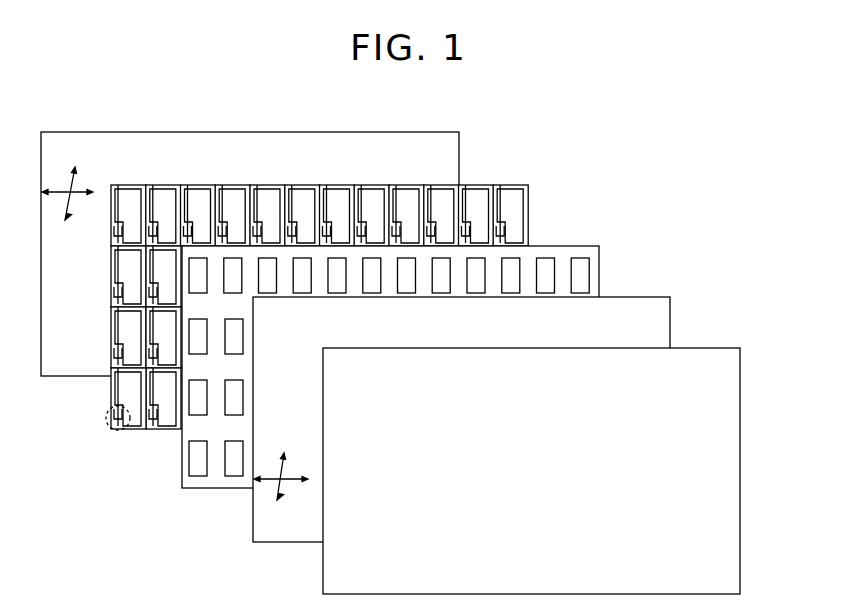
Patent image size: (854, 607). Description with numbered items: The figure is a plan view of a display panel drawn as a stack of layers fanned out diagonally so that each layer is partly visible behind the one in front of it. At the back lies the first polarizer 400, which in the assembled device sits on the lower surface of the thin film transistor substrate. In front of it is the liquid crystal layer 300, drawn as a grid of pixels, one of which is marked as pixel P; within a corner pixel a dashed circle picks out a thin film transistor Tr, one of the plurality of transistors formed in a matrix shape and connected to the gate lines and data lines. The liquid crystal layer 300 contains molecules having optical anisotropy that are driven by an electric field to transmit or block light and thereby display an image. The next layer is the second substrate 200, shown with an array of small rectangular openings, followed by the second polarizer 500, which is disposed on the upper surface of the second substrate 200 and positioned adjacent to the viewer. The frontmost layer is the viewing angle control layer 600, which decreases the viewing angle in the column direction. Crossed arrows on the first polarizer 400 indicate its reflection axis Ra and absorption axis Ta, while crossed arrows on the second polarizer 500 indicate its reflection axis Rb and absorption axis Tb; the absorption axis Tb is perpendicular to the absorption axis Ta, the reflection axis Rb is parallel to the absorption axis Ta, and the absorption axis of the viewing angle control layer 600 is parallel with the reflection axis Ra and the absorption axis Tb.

The first polarizer 400 is at (445, 132).
The liquid crystal layer 300 is at (296, 261).
The second substrate 200 is at (577, 246).
The second polarizer 500 is at (643, 297).
The viewing angle control layer 600 is at (718, 348).
The pixel P is at (124, 200).
The thin film transistor Tr is at (106, 418).
The reflection axis of the first polarizer Ra is at (75, 205).
The absorption axis of the first polarizer Ta is at (67, 205).
The reflection axis of the second polarizer Rb is at (281, 503).
The absorption axis of the second polarizer Tb is at (298, 478).